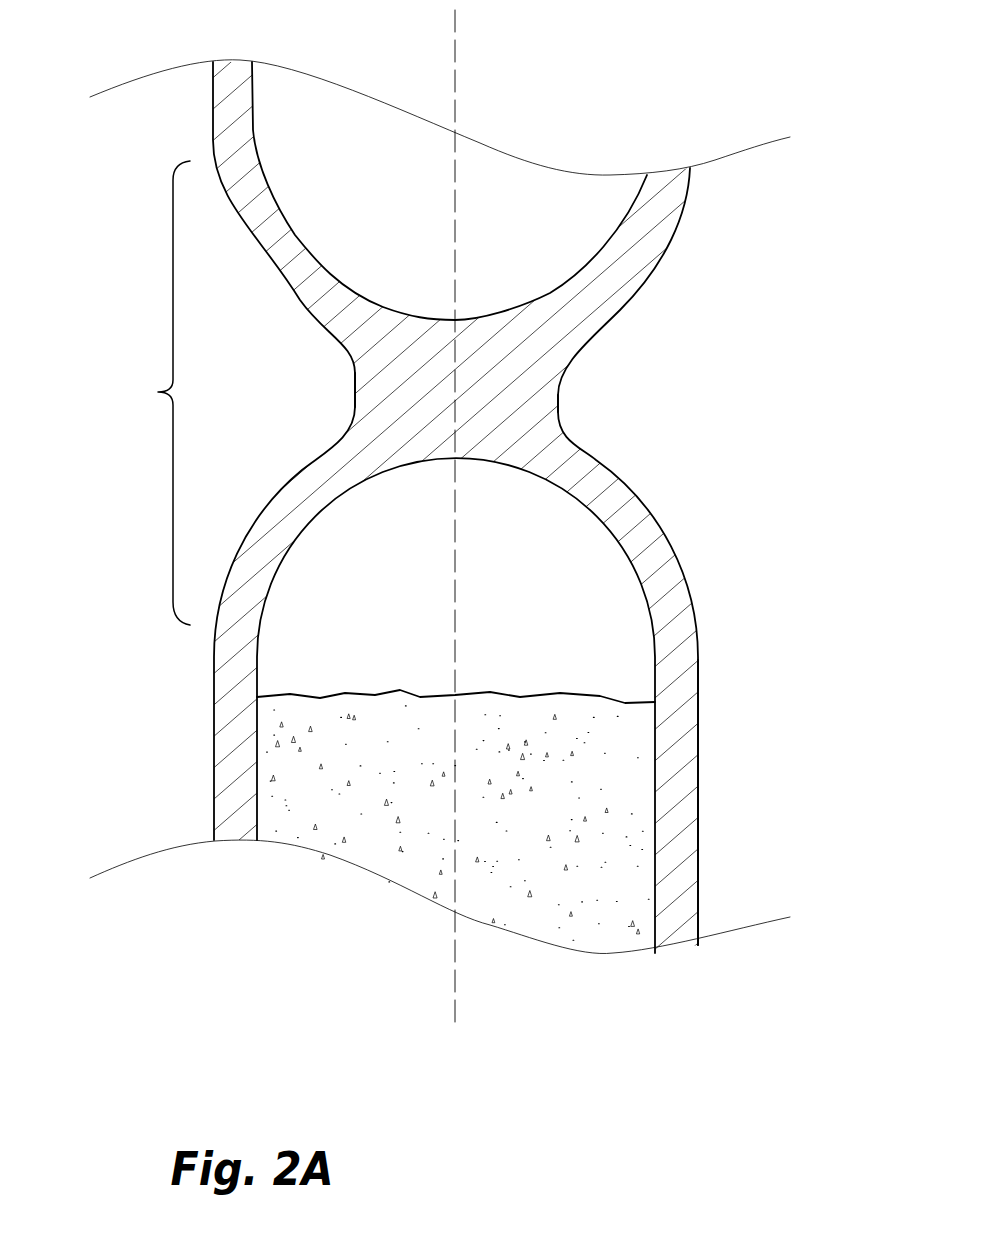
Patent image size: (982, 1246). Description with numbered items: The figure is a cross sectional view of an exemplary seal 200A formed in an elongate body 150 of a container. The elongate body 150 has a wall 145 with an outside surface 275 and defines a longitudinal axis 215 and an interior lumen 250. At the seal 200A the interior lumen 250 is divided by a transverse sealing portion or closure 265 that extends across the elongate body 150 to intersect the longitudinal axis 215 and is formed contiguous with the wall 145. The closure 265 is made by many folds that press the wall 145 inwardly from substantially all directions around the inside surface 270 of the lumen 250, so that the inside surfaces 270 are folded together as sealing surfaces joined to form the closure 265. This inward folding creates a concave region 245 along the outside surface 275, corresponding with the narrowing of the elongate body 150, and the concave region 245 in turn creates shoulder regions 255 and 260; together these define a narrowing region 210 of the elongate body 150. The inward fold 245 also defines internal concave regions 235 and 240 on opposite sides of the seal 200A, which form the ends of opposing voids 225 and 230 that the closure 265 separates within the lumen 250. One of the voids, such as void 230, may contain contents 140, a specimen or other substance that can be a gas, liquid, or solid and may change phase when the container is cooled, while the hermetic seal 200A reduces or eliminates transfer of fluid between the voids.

The seal 200A is at (737, 373).
The contents 140 is at (602, 767).
The wall 145 is at (683, 680).
The elongate body 150 is at (698, 824).
The narrowing region 210 is at (148, 393).
The longitudinal axis 215 is at (455, 47).
The void 225 is at (595, 227).
The void 230 is at (590, 602).
The internal concave region 235 is at (408, 237).
The internal concave region 240 is at (423, 525).
The concave region 245 is at (558, 406).
The interior lumen 250 is at (507, 190).
The shoulder region 255 is at (270, 267).
The shoulder region 260 is at (593, 460).
The sealing portion 265 is at (475, 430).
The inside surface 270 is at (255, 100).
The outside surface 275 is at (685, 203).